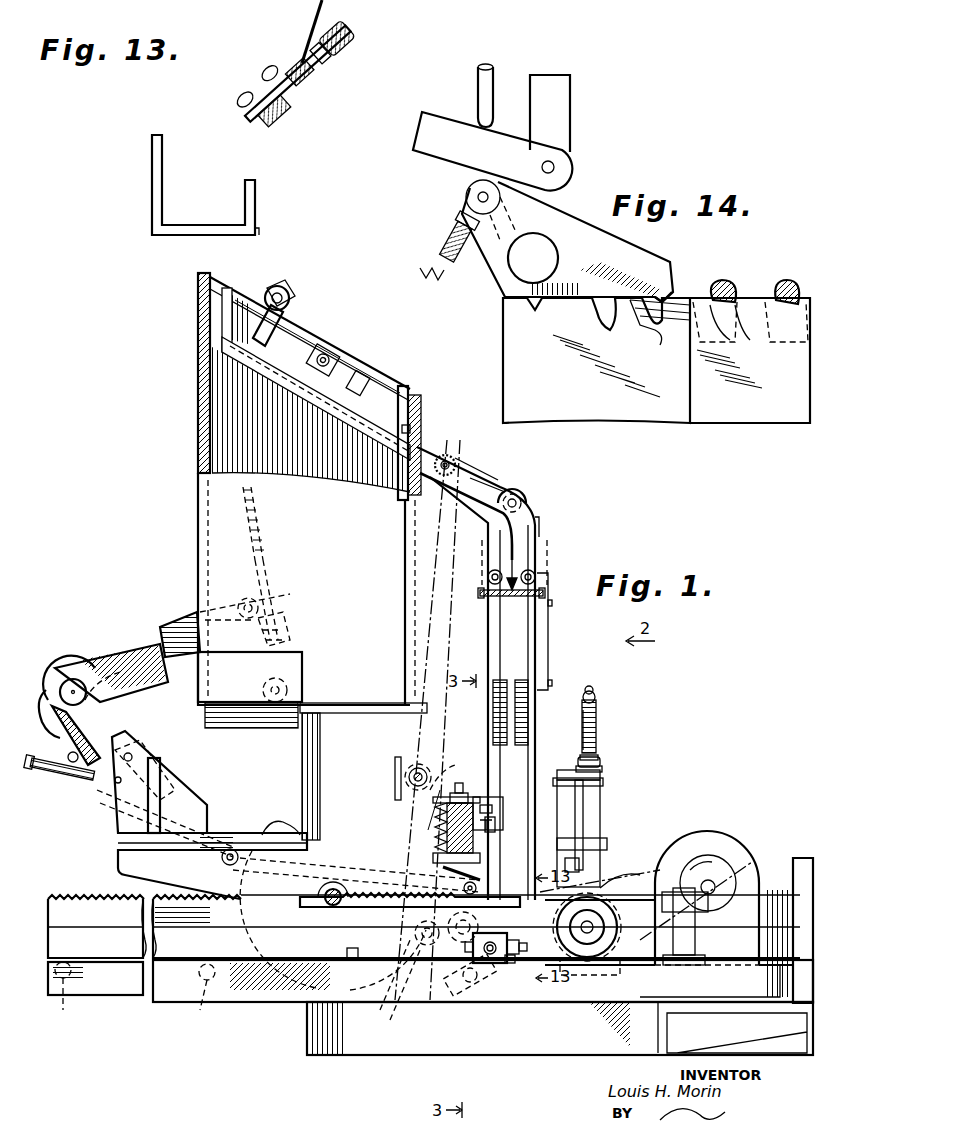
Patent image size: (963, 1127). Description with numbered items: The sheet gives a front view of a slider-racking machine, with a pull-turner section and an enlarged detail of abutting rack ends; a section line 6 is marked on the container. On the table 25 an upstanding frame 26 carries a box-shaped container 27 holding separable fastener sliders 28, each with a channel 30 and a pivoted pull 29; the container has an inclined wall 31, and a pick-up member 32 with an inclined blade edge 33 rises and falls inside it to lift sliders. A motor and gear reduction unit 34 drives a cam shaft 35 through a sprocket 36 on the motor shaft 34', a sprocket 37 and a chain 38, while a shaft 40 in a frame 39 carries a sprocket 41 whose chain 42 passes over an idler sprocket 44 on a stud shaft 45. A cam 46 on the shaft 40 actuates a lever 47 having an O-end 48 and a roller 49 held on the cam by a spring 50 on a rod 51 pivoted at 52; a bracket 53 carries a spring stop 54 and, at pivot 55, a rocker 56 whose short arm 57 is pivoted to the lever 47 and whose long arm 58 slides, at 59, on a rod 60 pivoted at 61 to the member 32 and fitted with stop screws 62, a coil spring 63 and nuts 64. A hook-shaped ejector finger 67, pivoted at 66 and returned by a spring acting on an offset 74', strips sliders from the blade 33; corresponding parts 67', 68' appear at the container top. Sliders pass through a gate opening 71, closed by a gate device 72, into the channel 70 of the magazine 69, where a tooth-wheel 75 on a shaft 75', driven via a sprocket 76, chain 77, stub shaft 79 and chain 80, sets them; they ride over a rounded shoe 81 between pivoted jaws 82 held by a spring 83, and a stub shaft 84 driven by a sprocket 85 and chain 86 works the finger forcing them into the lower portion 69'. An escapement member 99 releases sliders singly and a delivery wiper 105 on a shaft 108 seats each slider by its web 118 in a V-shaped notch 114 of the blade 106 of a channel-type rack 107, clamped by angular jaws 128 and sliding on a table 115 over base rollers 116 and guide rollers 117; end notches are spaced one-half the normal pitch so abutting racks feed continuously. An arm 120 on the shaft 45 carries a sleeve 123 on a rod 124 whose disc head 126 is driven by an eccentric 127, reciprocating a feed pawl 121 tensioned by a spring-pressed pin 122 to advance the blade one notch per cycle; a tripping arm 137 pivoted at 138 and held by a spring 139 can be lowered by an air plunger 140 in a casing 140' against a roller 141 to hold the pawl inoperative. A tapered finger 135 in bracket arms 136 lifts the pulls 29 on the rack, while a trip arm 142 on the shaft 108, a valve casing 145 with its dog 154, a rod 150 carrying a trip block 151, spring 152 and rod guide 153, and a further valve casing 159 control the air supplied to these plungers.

In FIG. 1, the guide plate 6 is at (250, 267).
In FIG. 1, the table 25 is at (310, 1030).
In FIG. 1, the upstanding frame 26 is at (310, 750).
In FIG. 1, the box-shaped container 27 is at (304, 589).
In FIG. 13, the separable fastener sliders 28 is at (345, 40).
In FIG. 14, the separable fastener sliders 28 is at (726, 282).
In FIG. 13, the pulls 29 is at (322, 10).
In FIG. 13, the channel of the slider 30 is at (335, 52).
In FIG. 14, the channel of the slider 30 is at (787, 280).
In FIG. 1, the inclined wall 31 is at (215, 286).
In FIG. 1, the slider pick-up member 32 is at (205, 424).
In FIG. 1, the inclined blade edge 33 is at (225, 350).
In FIG. 1, the electric motor and gear reduction unit 34 is at (732, 829).
In FIG. 1, the motor shaft 34' is at (746, 858).
In FIG. 1, the cam shaft 35 is at (590, 925).
In FIG. 1, the sprocket 36 is at (708, 855).
In FIG. 1, the sprocket 37 is at (620, 915).
In FIG. 1, the chain 38 is at (650, 870).
In FIG. 1, the frame 39 is at (310, 942).
In FIG. 1, the shaft 40 is at (336, 890).
In FIG. 1, the sprocket 41 is at (340, 890).
In FIG. 1, the chain 42 is at (415, 880).
In FIG. 1, the idler sprocket 44 is at (432, 948).
In FIG. 1, the stud shaft 45 is at (455, 940).
In FIG. 1, the cam 46 is at (265, 845).
In FIG. 1, the lever 47 is at (288, 820).
In FIG. 1, the O-end 48 is at (378, 984).
In FIG. 1, the roller 49 is at (392, 995).
In FIG. 1, the spring 50 is at (85, 790).
In FIG. 1, the rod 51 is at (183, 805).
In FIG. 1, the pivot 52 is at (229, 848).
In FIG. 1, the bracket 53 is at (175, 775).
In FIG. 1, the spring stop 54 is at (128, 740).
In FIG. 1, the pivot 55 is at (80, 680).
In FIG. 1, the rocker 56 is at (120, 655).
In FIG. 1, the short arm 57 is at (48, 690).
In FIG. 1, the long arm 58 is at (173, 625).
In FIG. 1, the sliding mounting 59 is at (262, 600).
In FIG. 1, the rod 60 is at (285, 645).
In FIG. 1, the pivot 61 is at (290, 672).
In FIG. 1, the adjustable stop screws 62 is at (283, 622).
In FIG. 1, the coil spring 63 is at (268, 555).
In FIG. 1, the nuts 64 is at (262, 507).
In FIG. 1, the bracket 66 is at (285, 332).
In FIG. 1, the hook-shaped ejector finger 67 is at (283, 384).
In FIG. 1, the bracket 67' is at (307, 280).
In FIG. 1, the roller 68' is at (300, 297).
In FIG. 1, the magazine 69 is at (465, 720).
In FIG. 1, the lower perpendicular portion of the magazine 69' is at (489, 712).
In FIG. 1, the channel of the magazine 70 is at (478, 478).
In FIG. 1, the gate opening 71 is at (421, 420).
In FIG. 1, the pivoted gate device 72 is at (406, 386).
In FIG. 1, the offset 74' is at (348, 358).
In FIG. 1, the tooth-wheel 75 is at (463, 447).
In FIG. 1, the shaft 75' is at (467, 431).
In FIG. 1, the sprocket 76 is at (462, 463).
In FIG. 1, the chain 77 is at (412, 521).
In FIG. 1, the stub shaft 79 is at (410, 772).
In FIG. 1, the chain 80 is at (395, 795).
In FIG. 1, the rounded shoe 81 is at (488, 555).
In FIG. 1, the pivoted jaws 82 is at (523, 572).
In FIG. 1, the spring 83 is at (493, 598).
In FIG. 1, the stub shaft 84 is at (525, 510).
In FIG. 1, the sprocket 85 is at (518, 488).
In FIG. 1, the chain 86 is at (505, 470).
In FIG. 1, the escapement arm 99 is at (580, 800).
In FIG. 1, the delivery wiper 105 is at (575, 840).
In FIG. 13, the blade 106 is at (300, 72).
In FIG. 14, the blade 106 is at (503, 322).
In FIG. 1, the blade 106 is at (83, 900).
In FIG. 13, the channel-type rack 107 is at (165, 194).
In FIG. 1, the shaft 108 is at (590, 872).
In FIG. 14, the V-shaped notches 114 is at (713, 325).
In FIG. 1, the V-shaped notches 114 is at (53, 895).
In FIG. 1, the rack guide and supporting table 115 is at (116, 993).
In FIG. 1, the base rollers 116 is at (134, 998).
In FIG. 1, the rollers 117 is at (350, 960).
In FIG. 14, the web 118 is at (705, 298).
In FIG. 1, the arm 120 is at (465, 990).
In FIG. 14, the rack feed pawl 121 is at (560, 230).
In FIG. 14, the spring-pressed pin 122 is at (430, 268).
In FIG. 1, the sleeve 123 is at (500, 965).
In FIG. 1, the rod 124 is at (513, 956).
In FIG. 1, the disc head 126 is at (610, 950).
In FIG. 1, the eccentric 127 is at (590, 975).
In FIG. 13, the clamping jaws 128 is at (280, 120).
In FIG. 13, the long tapered finger 135 is at (305, 55).
In FIG. 1, the long tapered finger 135 is at (636, 872).
In FIG. 1, the bracket arms 136 is at (700, 945).
In FIG. 14, the pawl tripping arm 137 is at (450, 150).
In FIG. 1, the pawl tripping arm 137 is at (450, 850).
In FIG. 14, the pivot 138 is at (555, 160).
In FIG. 1, the pivot 138 is at (420, 895).
In FIG. 1, the spring 139 is at (440, 790).
In FIG. 14, the air actuated plunger 140 is at (514, 84).
In FIG. 1, the air actuated plunger 140 is at (477, 788).
In FIG. 1, the casing 140' is at (489, 796).
In FIG. 14, the roller 141 is at (466, 190).
In FIG. 1, the valve-tripping arm 142 is at (585, 765).
In FIG. 1, the valve casing 145 is at (612, 830).
In FIG. 1, the long rod 150 is at (600, 758).
In FIG. 1, the trip-block 151 is at (602, 770).
In FIG. 1, the spring 152 is at (596, 700).
In FIG. 1, the rod guide 153 is at (598, 735).
In FIG. 1, the dog 154 is at (603, 790).
In FIG. 1, the valve casing 159 is at (507, 965).